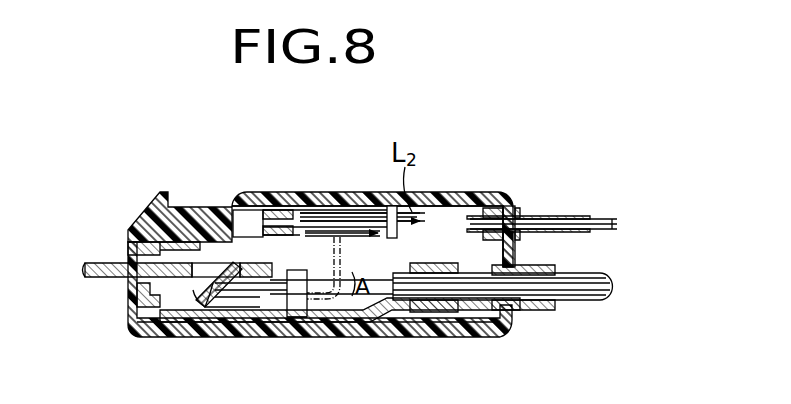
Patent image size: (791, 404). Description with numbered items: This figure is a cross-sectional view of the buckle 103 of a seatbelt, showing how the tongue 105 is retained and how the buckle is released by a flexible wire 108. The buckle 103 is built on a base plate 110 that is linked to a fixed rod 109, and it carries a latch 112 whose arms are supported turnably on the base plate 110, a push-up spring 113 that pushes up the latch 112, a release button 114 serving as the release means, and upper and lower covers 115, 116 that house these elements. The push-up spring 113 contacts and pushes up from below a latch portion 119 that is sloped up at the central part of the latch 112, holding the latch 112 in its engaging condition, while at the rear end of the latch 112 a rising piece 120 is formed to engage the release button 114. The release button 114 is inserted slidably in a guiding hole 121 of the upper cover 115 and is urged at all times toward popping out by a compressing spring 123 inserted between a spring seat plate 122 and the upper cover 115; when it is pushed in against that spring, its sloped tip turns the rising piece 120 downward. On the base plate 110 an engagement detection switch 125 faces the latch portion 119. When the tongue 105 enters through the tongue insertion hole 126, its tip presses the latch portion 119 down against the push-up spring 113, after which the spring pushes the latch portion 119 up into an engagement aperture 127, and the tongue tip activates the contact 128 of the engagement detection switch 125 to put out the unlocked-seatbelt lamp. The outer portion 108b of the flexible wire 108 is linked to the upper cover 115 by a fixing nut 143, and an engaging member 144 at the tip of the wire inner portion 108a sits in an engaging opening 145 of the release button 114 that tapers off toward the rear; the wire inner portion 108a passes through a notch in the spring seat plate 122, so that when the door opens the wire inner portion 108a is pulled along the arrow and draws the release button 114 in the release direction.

The buckle 103 is at (442, 177).
The tongue 105 is at (105, 262).
The flexible wire 108 is at (602, 217).
The wire inner portion 108a is at (615, 240).
The outer portion 108b is at (565, 216).
The fixed rod 109 is at (575, 302).
The base plate 110 is at (160, 333).
The latch 112 is at (347, 322).
The push-up spring 113 is at (222, 326).
The release button 114 is at (138, 206).
The upper cover 115 is at (480, 196).
The lower cover 116 is at (438, 335).
The latch portion 119 is at (205, 283).
The rising piece 120 is at (342, 250).
The guiding hole 121 is at (203, 268).
The spring seat plate 122 is at (397, 236).
The compressing spring 123 is at (315, 212).
The engagement detection switch 125 is at (300, 325).
The tongue insertion hole 126 is at (125, 285).
The engagement aperture 127 is at (203, 232).
The contact 128 is at (290, 303).
The fixing nut 143 is at (500, 194).
The engaging member 144 is at (285, 212).
The engaging opening 145 is at (250, 218).